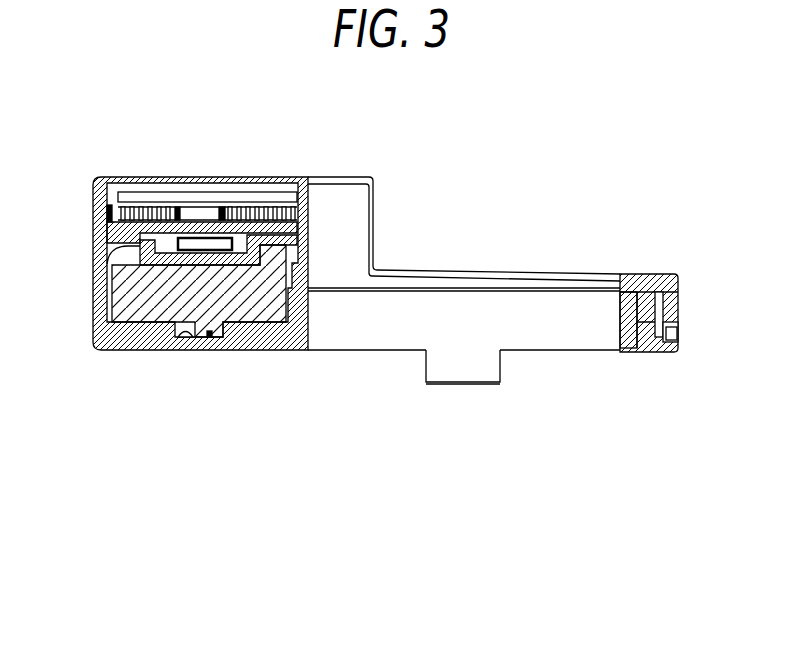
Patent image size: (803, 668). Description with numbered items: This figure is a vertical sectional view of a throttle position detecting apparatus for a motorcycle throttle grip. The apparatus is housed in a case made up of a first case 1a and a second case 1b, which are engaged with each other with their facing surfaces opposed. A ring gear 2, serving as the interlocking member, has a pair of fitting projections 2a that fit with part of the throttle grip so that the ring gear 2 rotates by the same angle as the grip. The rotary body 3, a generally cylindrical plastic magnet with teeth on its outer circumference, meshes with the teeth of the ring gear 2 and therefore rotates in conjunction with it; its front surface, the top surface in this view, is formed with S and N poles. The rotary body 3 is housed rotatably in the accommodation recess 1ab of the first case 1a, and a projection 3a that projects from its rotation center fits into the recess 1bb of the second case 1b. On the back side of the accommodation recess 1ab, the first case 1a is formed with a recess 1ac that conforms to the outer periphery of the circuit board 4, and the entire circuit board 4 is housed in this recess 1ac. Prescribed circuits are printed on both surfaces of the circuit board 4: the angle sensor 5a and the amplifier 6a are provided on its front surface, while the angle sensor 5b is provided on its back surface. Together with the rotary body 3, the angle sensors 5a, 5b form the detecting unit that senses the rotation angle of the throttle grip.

The first case 1a is at (643, 275).
The second case 1b is at (667, 352).
The accommodation recess 1ab is at (117, 260).
The recess 1ac is at (110, 178).
The recess 1bb is at (177, 337).
The ring gear 2 is at (632, 352).
The fitting projections 2a is at (455, 373).
The rotary body 3 is at (125, 308).
The projection 3a is at (210, 337).
The circuit board 4 is at (93, 210).
The angle sensor 5a is at (198, 210).
The angle sensor 5b is at (135, 243).
The amplifier 6a is at (163, 195).